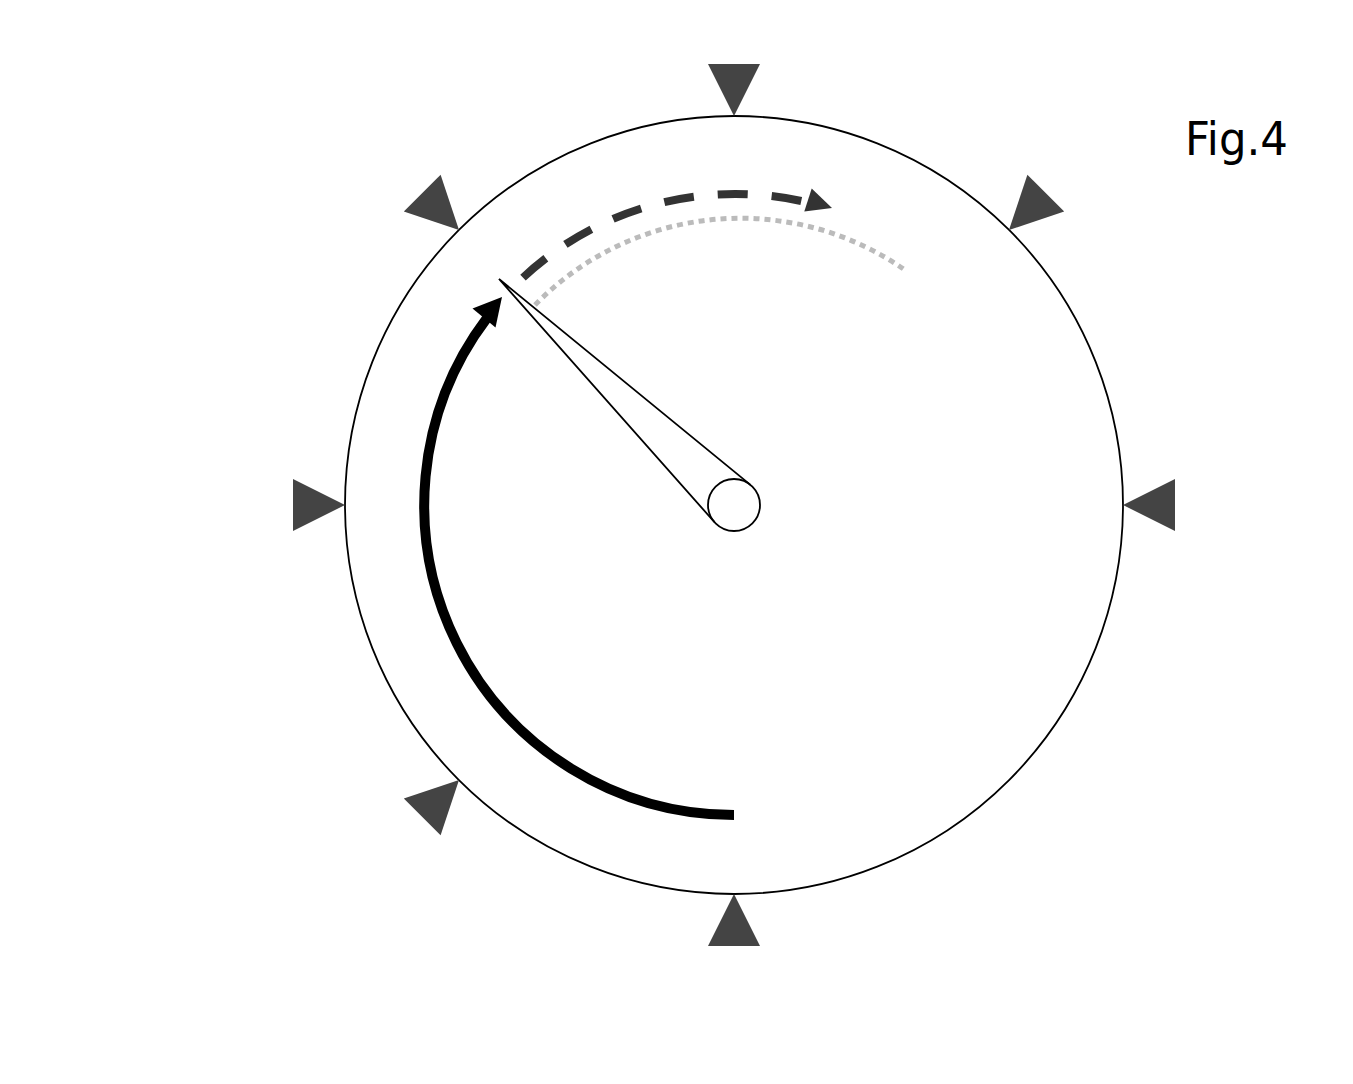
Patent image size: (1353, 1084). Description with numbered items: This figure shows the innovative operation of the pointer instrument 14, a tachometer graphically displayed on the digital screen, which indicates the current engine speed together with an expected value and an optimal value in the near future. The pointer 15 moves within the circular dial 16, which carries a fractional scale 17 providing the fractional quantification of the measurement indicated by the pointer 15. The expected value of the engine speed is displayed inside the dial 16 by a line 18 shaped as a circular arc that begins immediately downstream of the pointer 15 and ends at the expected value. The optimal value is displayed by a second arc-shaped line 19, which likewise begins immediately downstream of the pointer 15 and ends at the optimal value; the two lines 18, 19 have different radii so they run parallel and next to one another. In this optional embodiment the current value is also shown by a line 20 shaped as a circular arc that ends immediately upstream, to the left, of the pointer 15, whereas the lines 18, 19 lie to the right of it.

The pointer instrument 14 is at (218, 186).
The pointer 15 is at (682, 453).
The circular dial 16 is at (1062, 715).
The fractional scale 17 is at (1138, 440).
The line 18 is at (632, 207).
The line 19 is at (755, 222).
The line 20 is at (432, 588).